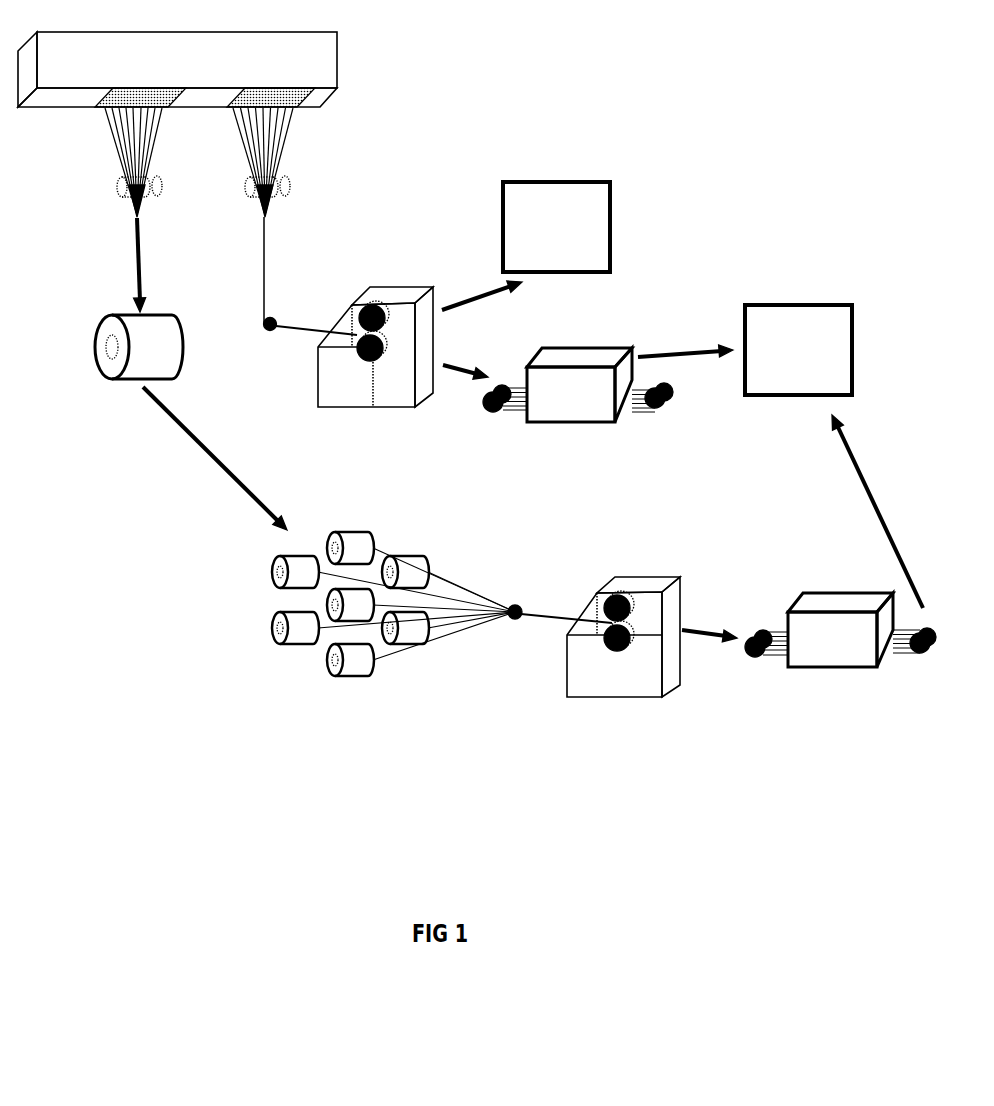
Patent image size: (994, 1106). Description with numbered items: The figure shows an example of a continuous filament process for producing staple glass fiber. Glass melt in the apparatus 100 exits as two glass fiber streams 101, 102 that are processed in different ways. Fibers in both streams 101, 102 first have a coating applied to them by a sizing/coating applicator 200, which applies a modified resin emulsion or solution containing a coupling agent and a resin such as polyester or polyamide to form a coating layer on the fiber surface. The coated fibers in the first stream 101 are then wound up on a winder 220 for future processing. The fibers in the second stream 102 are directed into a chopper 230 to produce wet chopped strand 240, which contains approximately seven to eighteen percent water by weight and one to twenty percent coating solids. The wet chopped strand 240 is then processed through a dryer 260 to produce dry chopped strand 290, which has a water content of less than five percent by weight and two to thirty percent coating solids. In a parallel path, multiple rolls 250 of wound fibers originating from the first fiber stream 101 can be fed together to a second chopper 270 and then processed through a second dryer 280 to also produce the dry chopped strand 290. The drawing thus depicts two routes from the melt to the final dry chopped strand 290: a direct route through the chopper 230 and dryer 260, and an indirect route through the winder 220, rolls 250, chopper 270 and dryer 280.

The apparatus 100 is at (177, 69).
The glass fiber stream 101 is at (104, 151).
The glass fiber stream 102 is at (301, 138).
The sizing/coating applicator 200 is at (104, 200).
The winder 220 is at (91, 370).
The chopper 230 is at (395, 271).
The wet chopped strand 240 is at (556, 227).
The rolls of wound fibers 250 is at (250, 606).
The dryer 260 is at (604, 333).
The chopper 270 is at (618, 711).
The dryer 280 is at (838, 685).
The dry chopped strand 290 is at (798, 350).